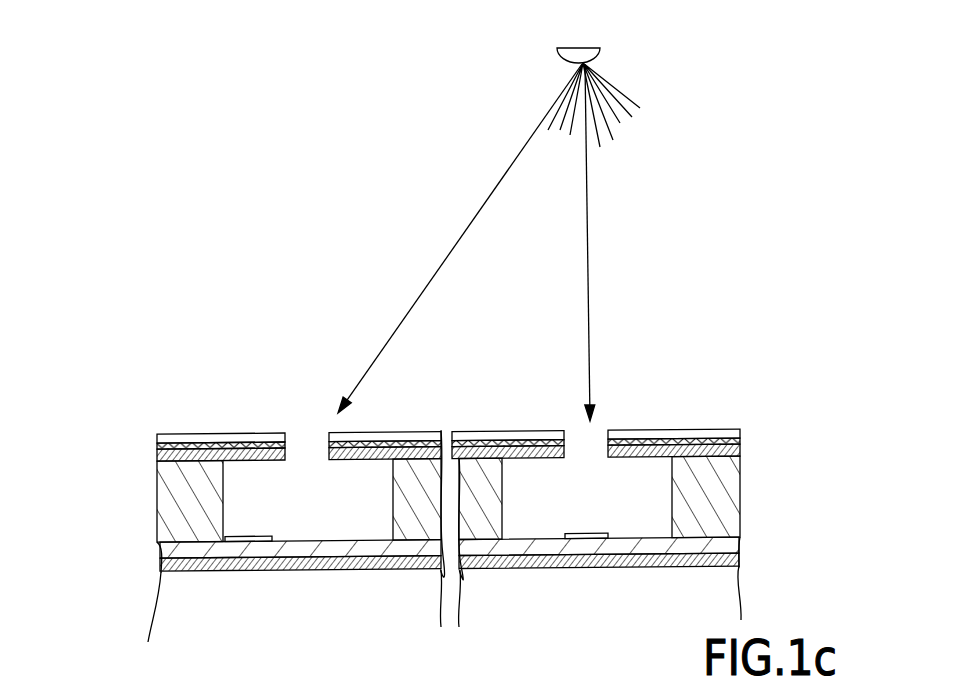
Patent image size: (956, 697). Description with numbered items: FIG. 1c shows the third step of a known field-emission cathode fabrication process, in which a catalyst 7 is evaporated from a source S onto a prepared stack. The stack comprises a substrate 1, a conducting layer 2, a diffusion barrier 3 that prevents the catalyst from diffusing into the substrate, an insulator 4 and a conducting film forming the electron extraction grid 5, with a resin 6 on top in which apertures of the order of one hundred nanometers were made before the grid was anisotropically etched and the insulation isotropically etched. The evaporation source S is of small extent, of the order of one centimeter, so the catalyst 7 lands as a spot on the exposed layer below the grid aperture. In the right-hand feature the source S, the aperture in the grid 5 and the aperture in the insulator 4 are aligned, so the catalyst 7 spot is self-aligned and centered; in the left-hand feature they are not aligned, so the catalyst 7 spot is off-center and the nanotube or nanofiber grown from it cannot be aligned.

The substrate 1 is at (182, 612).
The conducting layer 2 is at (175, 570).
The diffusion barrier 3 is at (175, 548).
The insulator 4 is at (178, 515).
The electron extraction grid 5 is at (170, 467).
The resin 6 is at (175, 449).
The catalyst 7 is at (183, 440).
The evaporation source S is at (600, 53).